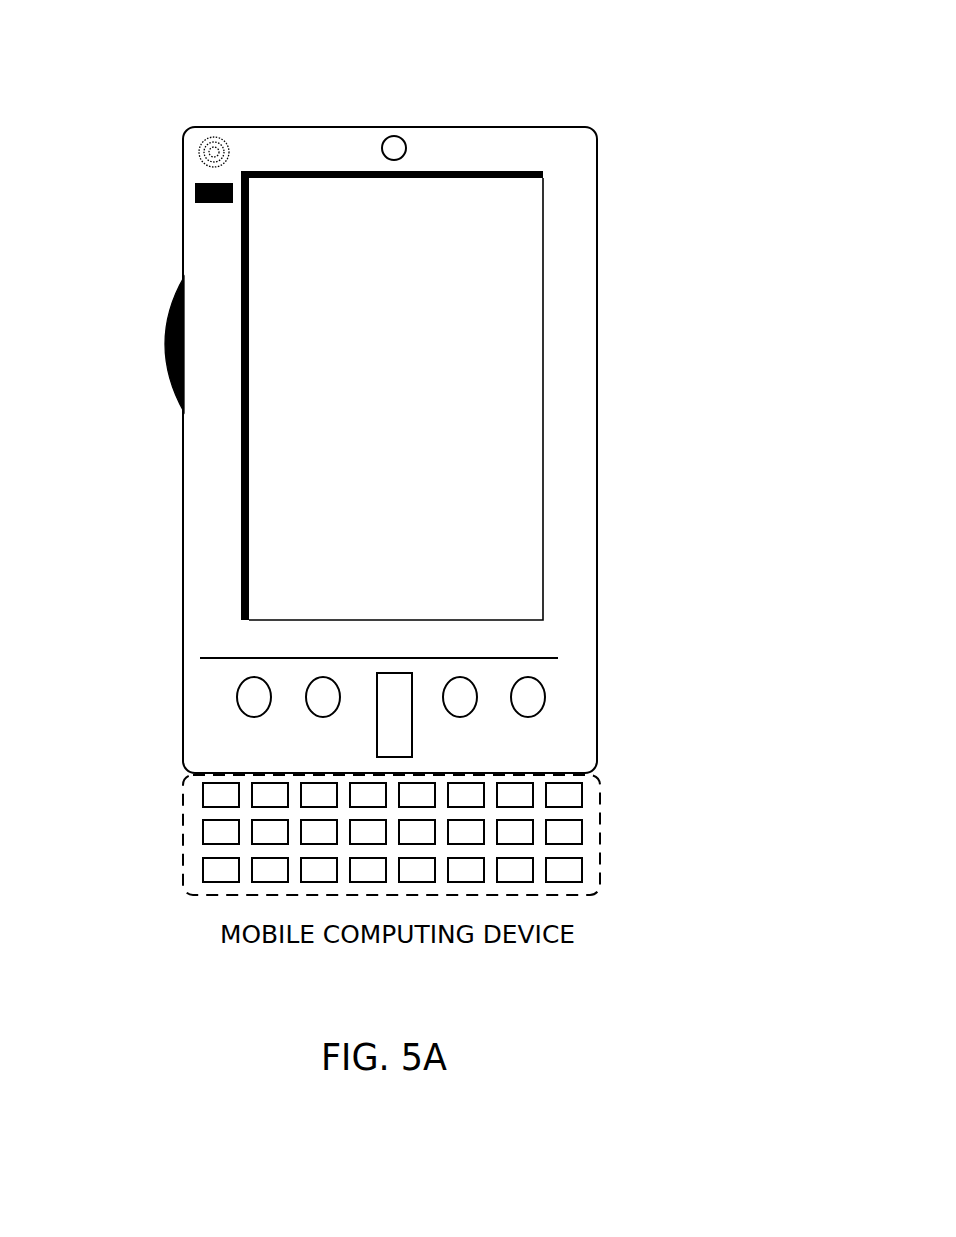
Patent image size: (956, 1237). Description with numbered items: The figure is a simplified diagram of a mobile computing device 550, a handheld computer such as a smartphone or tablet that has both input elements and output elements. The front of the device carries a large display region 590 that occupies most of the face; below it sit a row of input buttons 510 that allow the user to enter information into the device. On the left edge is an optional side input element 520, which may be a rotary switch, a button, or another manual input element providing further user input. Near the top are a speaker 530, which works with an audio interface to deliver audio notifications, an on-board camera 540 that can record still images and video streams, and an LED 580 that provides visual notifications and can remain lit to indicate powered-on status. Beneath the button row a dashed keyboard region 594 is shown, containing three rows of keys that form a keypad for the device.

The input buttons 510 is at (527, 708).
The side input element 520 is at (162, 352).
The speaker 530 is at (198, 140).
The on-board camera 540 is at (404, 148).
The mobile computing device 550 is at (596, 143).
The LED 580 is at (195, 186).
The display screen 590 is at (270, 557).
The keyboard 594 is at (183, 865).